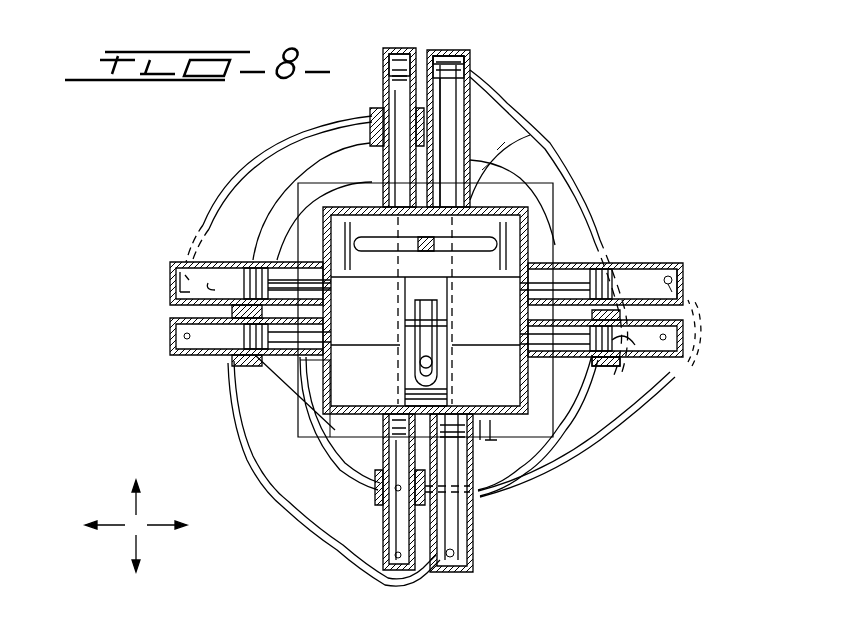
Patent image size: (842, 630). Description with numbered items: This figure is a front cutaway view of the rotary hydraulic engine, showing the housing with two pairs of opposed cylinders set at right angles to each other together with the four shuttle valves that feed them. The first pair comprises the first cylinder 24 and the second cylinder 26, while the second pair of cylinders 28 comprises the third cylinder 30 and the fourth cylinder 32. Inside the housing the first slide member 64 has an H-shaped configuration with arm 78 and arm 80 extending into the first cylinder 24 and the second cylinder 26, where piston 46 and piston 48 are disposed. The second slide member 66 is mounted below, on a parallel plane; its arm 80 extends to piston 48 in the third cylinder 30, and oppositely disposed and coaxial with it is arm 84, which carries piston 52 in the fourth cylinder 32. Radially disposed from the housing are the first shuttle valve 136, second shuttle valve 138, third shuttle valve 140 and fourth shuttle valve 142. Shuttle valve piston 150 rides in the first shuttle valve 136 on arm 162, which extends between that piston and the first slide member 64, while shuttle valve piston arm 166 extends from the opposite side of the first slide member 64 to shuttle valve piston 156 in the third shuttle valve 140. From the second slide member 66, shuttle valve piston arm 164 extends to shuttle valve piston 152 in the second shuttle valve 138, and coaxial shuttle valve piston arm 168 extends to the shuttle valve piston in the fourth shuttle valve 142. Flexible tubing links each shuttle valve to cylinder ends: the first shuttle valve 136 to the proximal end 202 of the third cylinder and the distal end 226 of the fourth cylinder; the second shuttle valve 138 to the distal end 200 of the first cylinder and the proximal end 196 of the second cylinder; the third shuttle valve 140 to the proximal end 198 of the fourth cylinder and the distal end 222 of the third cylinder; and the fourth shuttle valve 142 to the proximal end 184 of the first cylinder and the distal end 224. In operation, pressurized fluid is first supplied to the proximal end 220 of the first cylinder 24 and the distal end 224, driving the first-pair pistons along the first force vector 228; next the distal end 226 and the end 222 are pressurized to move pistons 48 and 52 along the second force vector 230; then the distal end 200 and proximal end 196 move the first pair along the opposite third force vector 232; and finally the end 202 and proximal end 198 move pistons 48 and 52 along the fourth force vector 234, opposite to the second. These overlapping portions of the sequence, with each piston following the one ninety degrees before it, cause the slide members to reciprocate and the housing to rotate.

The first cylinder 24 is at (462, 55).
The second cylinder 26 is at (475, 515).
The second pair of cylinders 28 is at (725, 250).
The third cylinder 30 is at (685, 264).
The fourth cylinder 32 is at (170, 276).
The piston 46 is at (466, 68).
The piston 48 is at (605, 265).
The piston 52 is at (244, 282).
The first slide member 64 is at (350, 238).
The second slide member 66 is at (456, 373).
The arm 78 is at (450, 110).
The arm 80 is at (560, 270).
The arm 84 is at (305, 285).
The first shuttle valve 136 is at (385, 52).
The second shuttle valve 138 is at (688, 342).
The third shuttle valve 140 is at (386, 548).
The fourth shuttle valve 142 is at (175, 350).
The shuttle valve piston 150 is at (385, 64).
The shuttle valve piston 152 is at (622, 373).
The shuttle valve piston 156 is at (240, 360).
The arm 162 is at (372, 140).
The shuttle valve piston arm 164 is at (586, 364).
The shuttle valve piston arm 166 is at (406, 378).
The shuttle valve piston arm 168 is at (300, 368).
The proximal end 184 is at (500, 158).
The proximal end 196 is at (542, 470).
The proximal end 198 is at (425, 294).
The distal end 200 is at (445, 55).
The proximal end 202 is at (690, 286).
The proximal end 220 is at (546, 155).
The distal end 222 is at (572, 205).
The distal end 224 is at (475, 555).
The distal end 226 is at (175, 287).
The first force vector 228 is at (133, 487).
The second force vector 230 is at (187, 525).
The third force vector 232 is at (133, 568).
The fourth force vector 234 is at (83, 525).